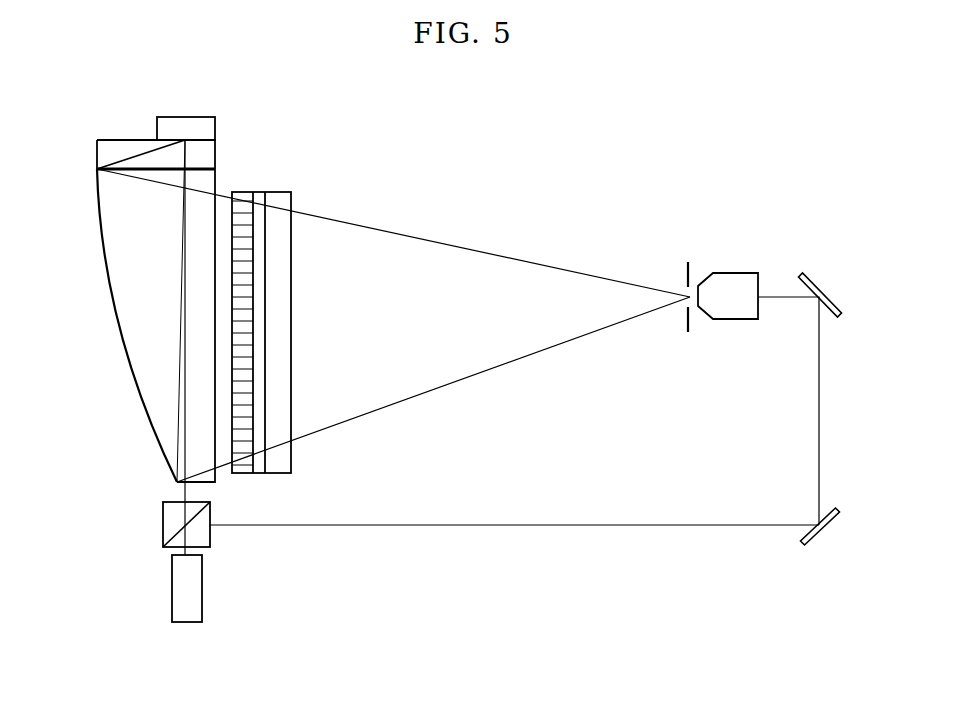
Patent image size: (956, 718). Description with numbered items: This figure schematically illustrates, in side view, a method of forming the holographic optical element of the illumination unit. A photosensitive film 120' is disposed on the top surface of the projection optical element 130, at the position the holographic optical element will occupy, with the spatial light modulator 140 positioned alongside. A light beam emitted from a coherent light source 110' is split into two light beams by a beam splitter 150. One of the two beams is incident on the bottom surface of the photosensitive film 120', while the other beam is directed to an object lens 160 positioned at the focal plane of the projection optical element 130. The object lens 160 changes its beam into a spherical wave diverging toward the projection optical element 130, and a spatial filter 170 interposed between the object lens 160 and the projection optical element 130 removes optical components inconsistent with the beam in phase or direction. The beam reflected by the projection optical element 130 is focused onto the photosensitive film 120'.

The coherent light source 110' is at (146, 588).
The photosensitive film 120' is at (216, 114).
The projection optical element 130 is at (117, 317).
The spatial light modulator 140 is at (283, 192).
The beam splitter 150 is at (163, 524).
The object lens 160 is at (738, 273).
The spatial filter 170 is at (688, 262).